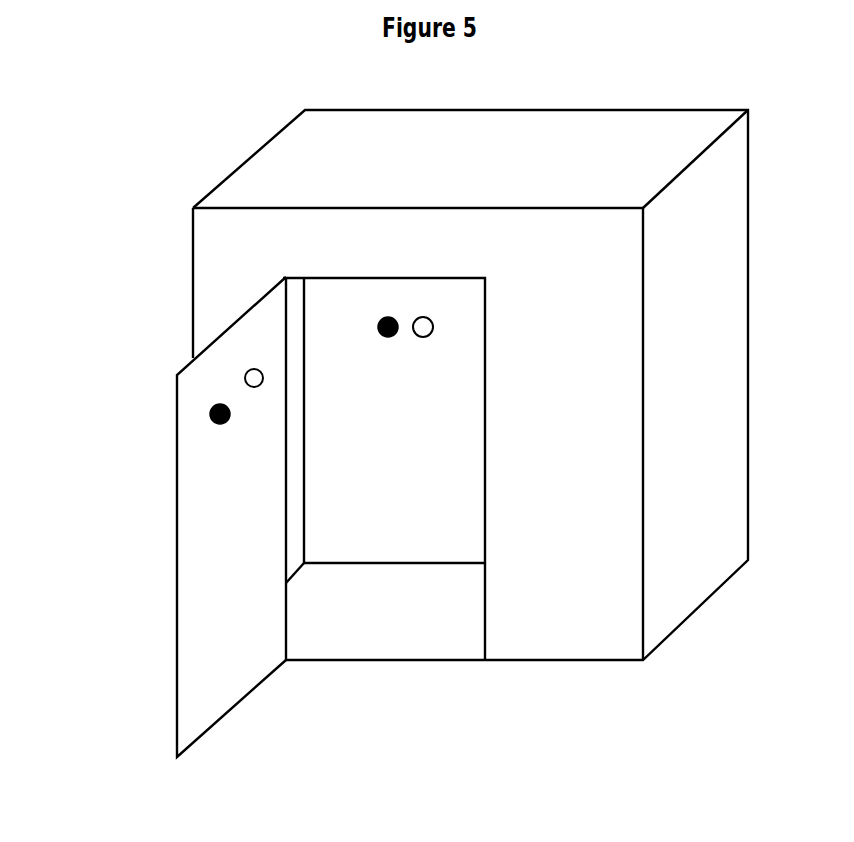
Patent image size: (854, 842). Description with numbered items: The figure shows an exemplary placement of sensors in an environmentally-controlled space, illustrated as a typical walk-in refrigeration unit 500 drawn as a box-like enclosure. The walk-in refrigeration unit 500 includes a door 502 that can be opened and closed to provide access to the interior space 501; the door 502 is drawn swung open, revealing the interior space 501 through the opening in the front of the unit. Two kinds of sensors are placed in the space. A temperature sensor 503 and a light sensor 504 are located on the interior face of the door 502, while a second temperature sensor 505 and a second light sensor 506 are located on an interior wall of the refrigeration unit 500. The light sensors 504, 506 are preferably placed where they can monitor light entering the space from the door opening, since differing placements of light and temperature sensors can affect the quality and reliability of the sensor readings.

The walk-in refrigeration unit 500 is at (243, 164).
The interior space 501 is at (415, 428).
The door 502 is at (177, 532).
The temperature sensor 503 is at (210, 410).
The light sensor 504 is at (245, 376).
The temperature sensor 505 is at (392, 316).
The light sensor 506 is at (433, 327).